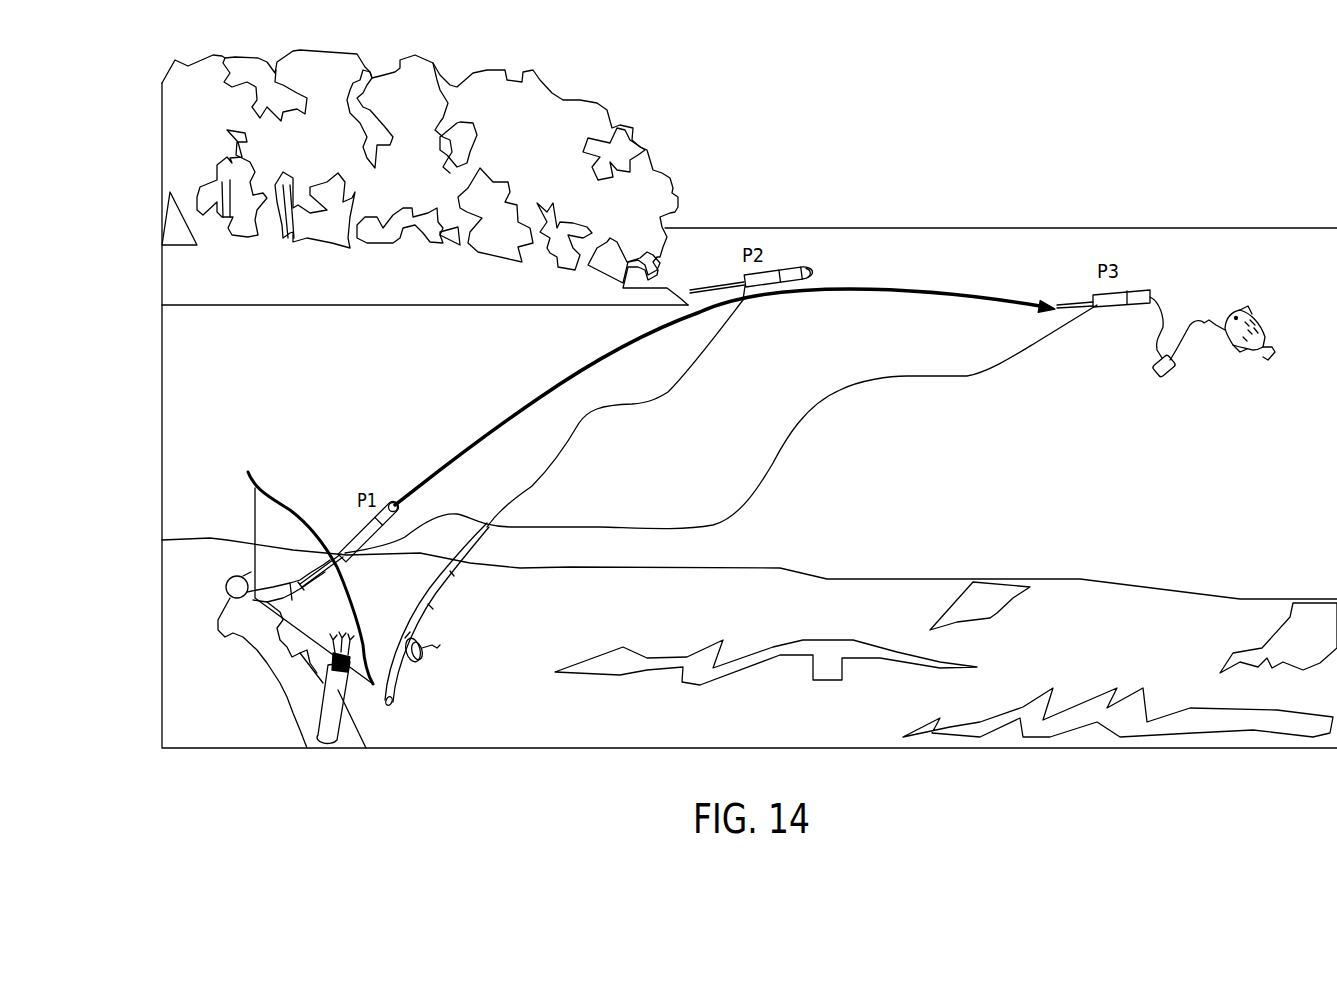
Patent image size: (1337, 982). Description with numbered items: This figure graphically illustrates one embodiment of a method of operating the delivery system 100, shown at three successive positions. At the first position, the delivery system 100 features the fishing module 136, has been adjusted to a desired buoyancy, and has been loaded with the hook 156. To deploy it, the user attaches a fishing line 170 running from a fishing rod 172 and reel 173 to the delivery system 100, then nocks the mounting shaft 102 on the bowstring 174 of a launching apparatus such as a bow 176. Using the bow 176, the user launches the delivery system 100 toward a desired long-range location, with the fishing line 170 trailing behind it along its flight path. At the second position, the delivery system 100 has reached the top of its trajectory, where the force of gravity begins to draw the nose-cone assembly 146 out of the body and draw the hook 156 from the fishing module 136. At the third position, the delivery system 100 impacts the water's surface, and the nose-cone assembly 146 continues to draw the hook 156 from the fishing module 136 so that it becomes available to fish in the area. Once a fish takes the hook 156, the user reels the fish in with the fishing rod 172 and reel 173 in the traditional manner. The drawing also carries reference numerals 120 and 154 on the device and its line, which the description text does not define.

The delivery system 100 is at (347, 520).
The mounting shaft 102 is at (309, 563).
The device body 120 is at (767, 296).
The fishing module 136 is at (788, 260).
The nose-cone assembly 146 is at (814, 270).
The fishing line 154 is at (1153, 324).
The hook 156 is at (1212, 332).
The fishing line 170 is at (462, 508).
The fishing rod 172 is at (450, 593).
The reel 173 is at (430, 663).
The bowstring 174 is at (255, 537).
The bow 176 is at (253, 447).